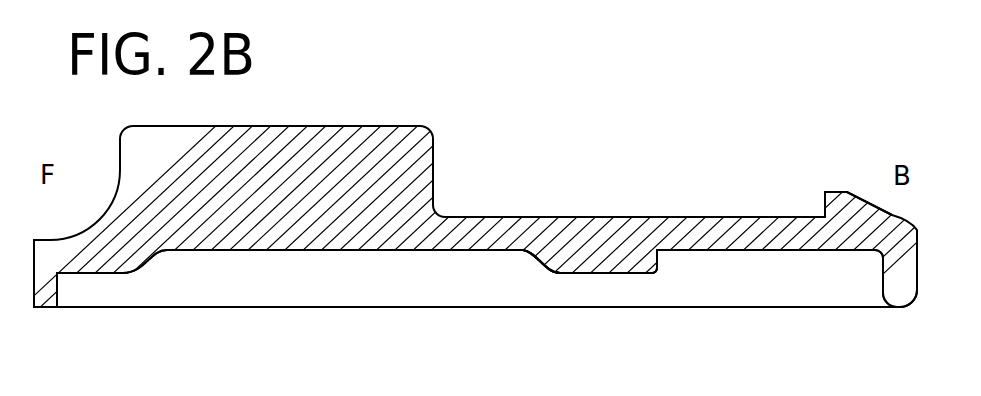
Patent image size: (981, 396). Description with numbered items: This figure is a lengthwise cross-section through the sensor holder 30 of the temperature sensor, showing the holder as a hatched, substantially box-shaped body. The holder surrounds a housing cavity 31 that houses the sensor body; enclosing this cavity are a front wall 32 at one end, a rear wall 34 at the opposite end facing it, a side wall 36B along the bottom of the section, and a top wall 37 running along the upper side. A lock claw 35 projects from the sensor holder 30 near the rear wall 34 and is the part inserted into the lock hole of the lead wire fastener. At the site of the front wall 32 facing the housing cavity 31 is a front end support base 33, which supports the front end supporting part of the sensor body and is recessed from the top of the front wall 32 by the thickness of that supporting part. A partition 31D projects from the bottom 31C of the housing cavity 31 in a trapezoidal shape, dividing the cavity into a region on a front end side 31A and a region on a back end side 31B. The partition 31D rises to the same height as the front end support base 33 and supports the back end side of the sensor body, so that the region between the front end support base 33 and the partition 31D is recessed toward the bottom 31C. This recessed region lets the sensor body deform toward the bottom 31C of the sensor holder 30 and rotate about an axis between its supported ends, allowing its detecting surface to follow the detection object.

The sensor holder 30 is at (463, 215).
The top wall 37 is at (598, 217).
The lock claw 35 is at (824, 209).
The front wall 32 is at (34, 277).
The front end support base 33 is at (90, 274).
The side wall 36B is at (207, 308).
The bottom 31C is at (317, 251).
The region on a front end side 31A is at (437, 293).
The housing cavity 31 is at (491, 280).
The partition 31D is at (600, 275).
The region on a back end side 31B is at (783, 293).
The rear wall 34 is at (919, 278).